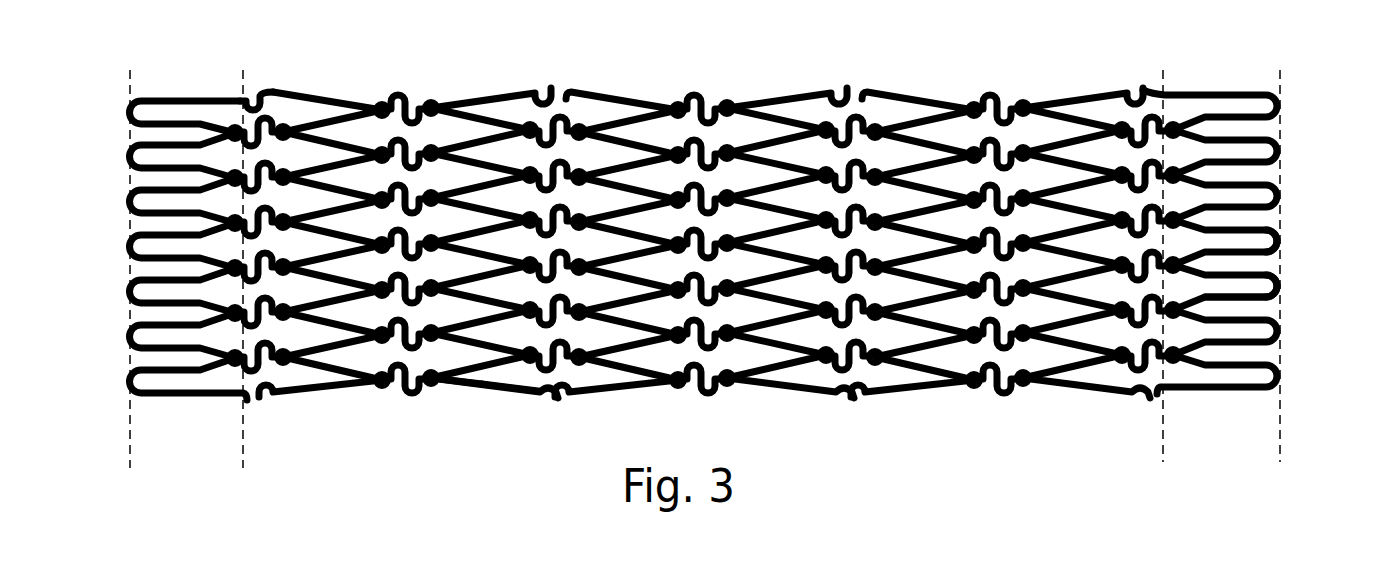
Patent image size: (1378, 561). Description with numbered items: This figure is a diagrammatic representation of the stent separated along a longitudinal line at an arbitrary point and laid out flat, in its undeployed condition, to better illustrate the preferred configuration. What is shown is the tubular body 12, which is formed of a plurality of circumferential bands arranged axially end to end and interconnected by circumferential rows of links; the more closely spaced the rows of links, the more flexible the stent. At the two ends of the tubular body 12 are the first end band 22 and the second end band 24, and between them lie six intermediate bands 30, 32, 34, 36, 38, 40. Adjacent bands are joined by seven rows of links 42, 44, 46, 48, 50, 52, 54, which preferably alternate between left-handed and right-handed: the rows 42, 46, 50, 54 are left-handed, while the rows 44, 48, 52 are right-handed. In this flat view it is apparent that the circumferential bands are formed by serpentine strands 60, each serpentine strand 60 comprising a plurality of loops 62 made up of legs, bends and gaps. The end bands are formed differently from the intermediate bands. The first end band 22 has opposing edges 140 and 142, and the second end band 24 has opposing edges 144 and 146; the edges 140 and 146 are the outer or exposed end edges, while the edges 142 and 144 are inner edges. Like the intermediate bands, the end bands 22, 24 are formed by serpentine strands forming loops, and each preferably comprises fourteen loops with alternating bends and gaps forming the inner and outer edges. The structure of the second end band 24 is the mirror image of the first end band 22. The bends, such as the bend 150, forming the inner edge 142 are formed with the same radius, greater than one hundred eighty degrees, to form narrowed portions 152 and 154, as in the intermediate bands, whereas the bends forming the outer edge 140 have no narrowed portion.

The tubular body 12 is at (322, 400).
The first end band 22 is at (173, 92).
The second end band 24 is at (1195, 92).
The intermediate band 30 is at (307, 90).
The intermediate band 32 is at (455, 92).
The intermediate band 34 is at (621, 92).
The intermediate band 36 is at (755, 92).
The intermediate band 38 is at (918, 92).
The intermediate band 40 is at (1050, 92).
The row of links 42 is at (265, 90).
The row of links 44 is at (400, 92).
The row of links 46 is at (542, 88).
The row of links 48 is at (700, 92).
The row of links 50 is at (845, 92).
The row of links 52 is at (998, 92).
The row of links 54 is at (1140, 90).
The serpentine strand 60 is at (493, 400).
The loop 62 is at (466, 400).
The outer edge 140 is at (130, 402).
The inner edge 142 is at (243, 448).
The inner edge 144 is at (1163, 395).
The outer edge 146 is at (1278, 443).
The bend 150 is at (1252, 270).
The narrowed portion 152 is at (1250, 305).
The narrowed portion 154 is at (1283, 285).